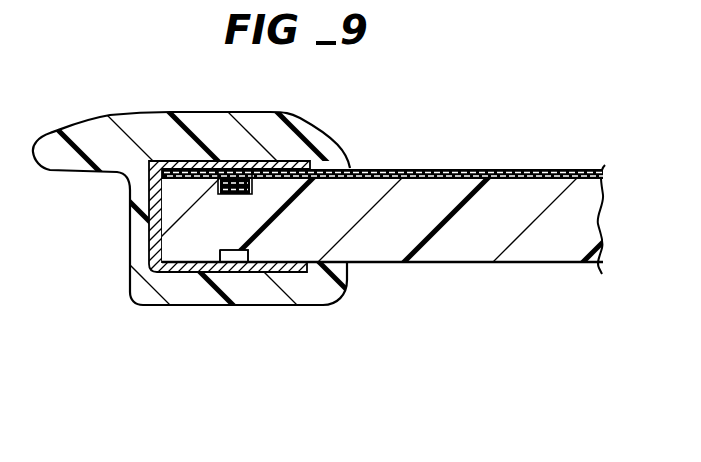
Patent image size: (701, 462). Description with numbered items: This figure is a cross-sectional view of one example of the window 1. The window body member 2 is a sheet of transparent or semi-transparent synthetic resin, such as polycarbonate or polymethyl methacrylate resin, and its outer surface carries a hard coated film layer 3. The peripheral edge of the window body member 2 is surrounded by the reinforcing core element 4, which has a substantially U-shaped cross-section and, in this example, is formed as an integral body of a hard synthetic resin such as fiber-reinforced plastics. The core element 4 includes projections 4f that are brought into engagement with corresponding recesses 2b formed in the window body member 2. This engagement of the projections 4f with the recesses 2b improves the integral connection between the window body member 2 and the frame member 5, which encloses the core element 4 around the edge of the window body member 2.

The window 1 is at (342, 216).
The window body member 2 is at (580, 215).
The recesses 2b is at (217, 185).
The hard coated film layer 3 is at (556, 169).
The reinforcing core element 4 is at (153, 233).
The projections 4f is at (237, 177).
The frame member 5 is at (78, 118).